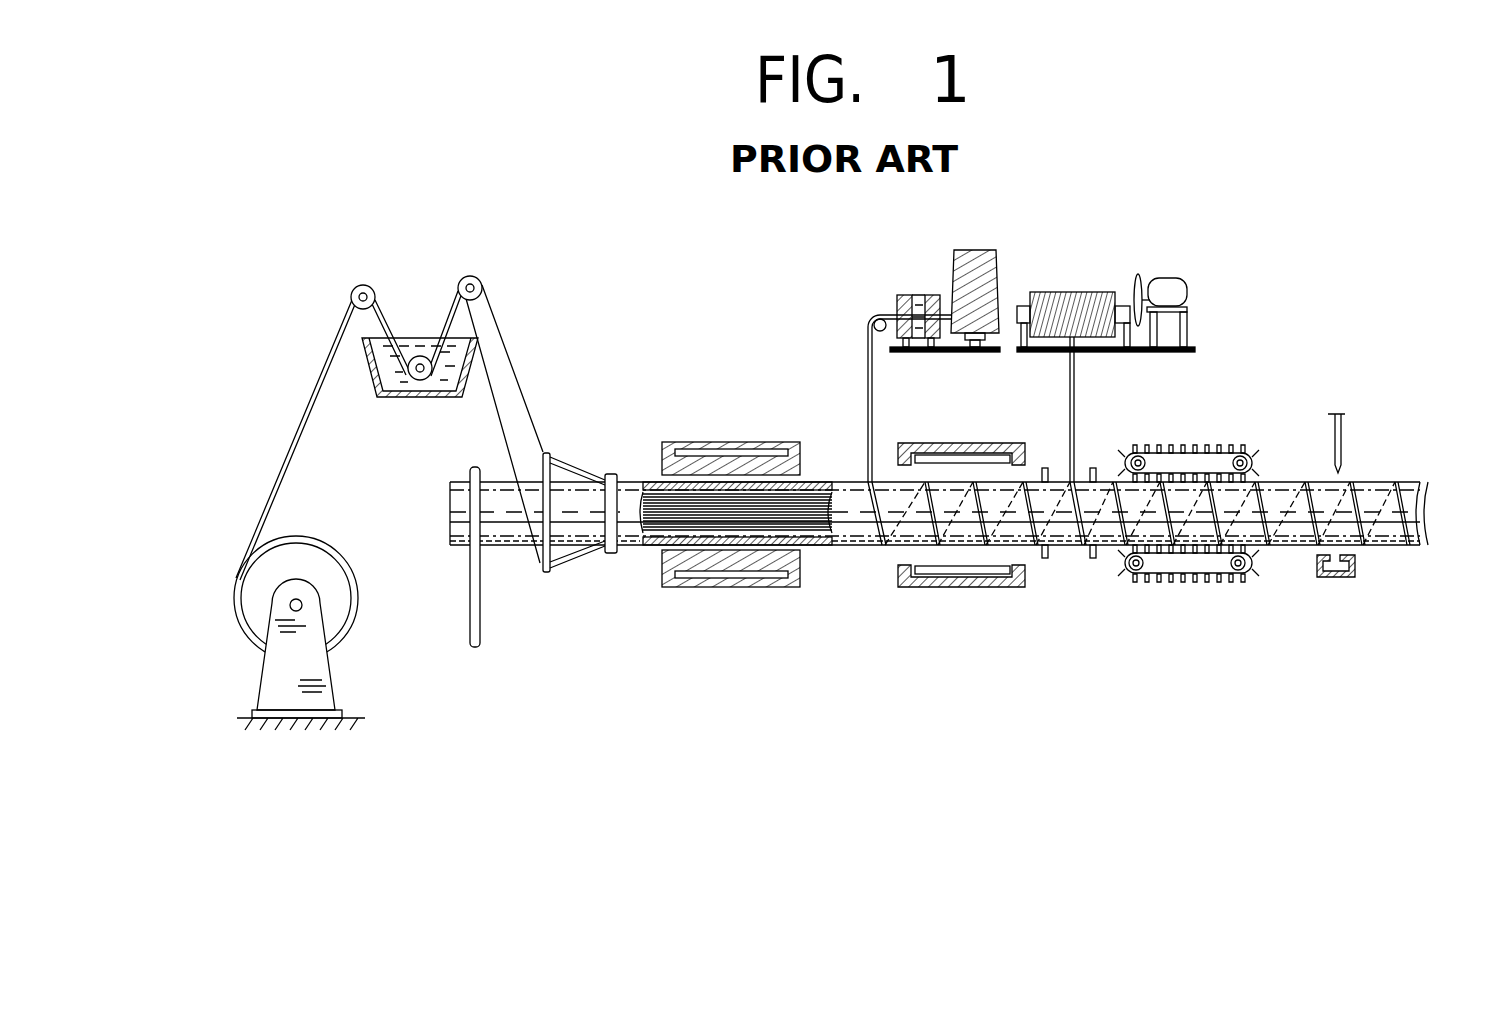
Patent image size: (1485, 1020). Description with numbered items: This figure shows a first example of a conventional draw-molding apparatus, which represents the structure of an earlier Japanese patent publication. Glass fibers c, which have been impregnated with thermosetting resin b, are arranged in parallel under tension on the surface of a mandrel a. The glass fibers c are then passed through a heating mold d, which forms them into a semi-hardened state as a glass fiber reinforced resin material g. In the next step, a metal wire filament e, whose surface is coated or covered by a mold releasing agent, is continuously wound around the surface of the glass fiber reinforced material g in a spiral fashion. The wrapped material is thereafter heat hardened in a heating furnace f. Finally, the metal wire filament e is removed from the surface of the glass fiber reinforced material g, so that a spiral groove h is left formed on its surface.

The mandrel a is at (500, 527).
The thermosetting resin b is at (445, 387).
The glass fibers c is at (508, 378).
The heating mold d is at (740, 455).
The metal wire filament e is at (870, 388).
The heating furnace f is at (986, 442).
The glass fiber reinforced resin material g is at (845, 497).
The spiral groove h is at (1395, 520).